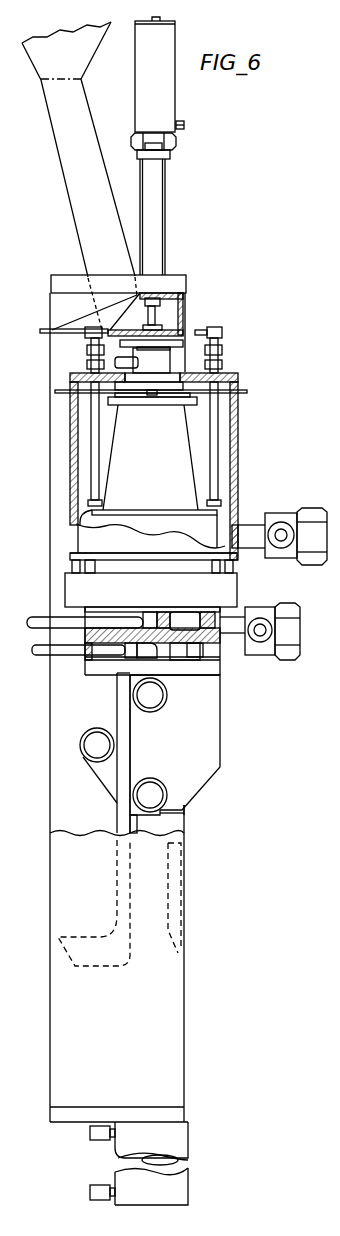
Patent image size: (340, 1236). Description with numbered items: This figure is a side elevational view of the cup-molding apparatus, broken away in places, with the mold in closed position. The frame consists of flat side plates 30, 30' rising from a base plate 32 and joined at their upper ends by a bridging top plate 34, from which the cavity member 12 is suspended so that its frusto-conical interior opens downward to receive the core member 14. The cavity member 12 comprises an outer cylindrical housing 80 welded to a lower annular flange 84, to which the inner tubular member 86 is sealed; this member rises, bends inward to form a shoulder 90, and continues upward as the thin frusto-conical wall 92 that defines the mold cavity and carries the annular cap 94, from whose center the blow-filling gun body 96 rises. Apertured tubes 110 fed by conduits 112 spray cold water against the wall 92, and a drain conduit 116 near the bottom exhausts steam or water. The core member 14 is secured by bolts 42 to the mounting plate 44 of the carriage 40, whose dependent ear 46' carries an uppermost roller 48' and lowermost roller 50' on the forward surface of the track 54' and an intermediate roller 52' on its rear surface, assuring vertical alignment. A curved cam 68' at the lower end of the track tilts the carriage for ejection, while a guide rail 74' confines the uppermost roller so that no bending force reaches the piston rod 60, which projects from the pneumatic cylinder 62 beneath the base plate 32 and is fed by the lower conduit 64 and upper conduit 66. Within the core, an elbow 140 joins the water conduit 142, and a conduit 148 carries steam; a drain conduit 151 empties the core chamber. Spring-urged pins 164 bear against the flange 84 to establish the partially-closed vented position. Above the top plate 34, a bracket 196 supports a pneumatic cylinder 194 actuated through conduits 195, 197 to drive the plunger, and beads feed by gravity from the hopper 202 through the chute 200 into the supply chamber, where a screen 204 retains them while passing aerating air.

The cavity member 12 is at (250, 468).
The core member 14 is at (240, 581).
The side plate 30 is at (117, 566).
The side plate 30' is at (119, 981).
The base plate 32 is at (138, 1112).
The top plate 34 is at (178, 275).
The carriage 40 is at (225, 745).
The bolts 42 is at (215, 650).
The mounting plate 44 is at (213, 675).
The dependent ear 46' is at (203, 745).
The uppermost roller 48' is at (168, 710).
The lowermost roller 50' is at (168, 776).
The intermediate roller 52' is at (88, 765).
The track 54' is at (143, 753).
The piston rod 60 is at (158, 821).
The pneumatic cylinder 62 is at (183, 1148).
The lower conduit 64 is at (88, 1192).
The upper conduit 66 is at (88, 1133).
The curved cam 68' is at (94, 903).
The guide rail 74' is at (157, 915).
The housing 80 is at (85, 546).
The annular flange 84 is at (72, 558).
The inner tubular member 86 is at (95, 528).
The shoulder 90 is at (90, 513).
The frusto-conical wall 92 is at (168, 473).
The annular cap 94 is at (198, 399).
The blow-filling gun body 96 is at (165, 365).
The apertured tubes 110 is at (207, 433).
The conduits 112 is at (53, 332).
The drain conduit 116 is at (255, 528).
The elbow 140 is at (155, 652).
The conduit 142 is at (65, 648).
The conduit 148 is at (55, 620).
The drain conduit 151 is at (238, 622).
The pins 164 is at (238, 568).
The pneumatic cylinder 194 is at (165, 105).
The conduit 195 is at (162, 25).
The bracket 196 is at (170, 154).
The conduit 197 is at (185, 125).
The chute 200 is at (97, 251).
The hopper 202 is at (78, 58).
The screen 204 is at (183, 300).